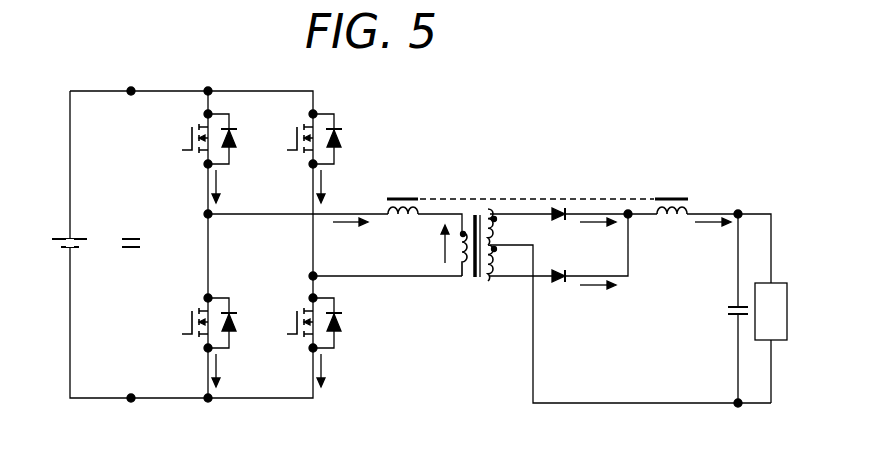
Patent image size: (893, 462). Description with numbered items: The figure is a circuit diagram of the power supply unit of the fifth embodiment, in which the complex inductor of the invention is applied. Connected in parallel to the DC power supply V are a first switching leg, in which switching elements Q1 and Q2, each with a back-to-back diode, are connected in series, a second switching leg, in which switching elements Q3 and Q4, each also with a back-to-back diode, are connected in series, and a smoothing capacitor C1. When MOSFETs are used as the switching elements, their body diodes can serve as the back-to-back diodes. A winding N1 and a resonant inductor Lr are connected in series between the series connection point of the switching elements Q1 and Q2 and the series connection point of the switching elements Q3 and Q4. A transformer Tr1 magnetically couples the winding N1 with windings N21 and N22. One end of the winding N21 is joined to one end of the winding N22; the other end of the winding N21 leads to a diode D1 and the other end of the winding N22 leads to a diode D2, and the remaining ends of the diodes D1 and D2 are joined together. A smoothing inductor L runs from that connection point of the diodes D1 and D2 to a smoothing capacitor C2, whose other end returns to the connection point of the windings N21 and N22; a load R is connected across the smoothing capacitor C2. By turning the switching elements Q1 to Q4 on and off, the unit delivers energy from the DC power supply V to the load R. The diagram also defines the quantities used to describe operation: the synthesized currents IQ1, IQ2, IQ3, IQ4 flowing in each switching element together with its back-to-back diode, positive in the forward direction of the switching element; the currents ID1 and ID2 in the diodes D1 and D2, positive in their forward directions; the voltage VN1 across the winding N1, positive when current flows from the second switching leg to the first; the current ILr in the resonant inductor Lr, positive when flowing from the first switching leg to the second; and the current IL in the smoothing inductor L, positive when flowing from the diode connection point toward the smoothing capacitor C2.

The DC power supply V is at (61, 244).
The smoothing capacitor C1 is at (144, 244).
The switching element Q1 is at (197, 139).
The switching element Q2 is at (197, 323).
The switching element Q3 is at (302, 139).
The switching element Q4 is at (302, 323).
The synthesized current IQ1 is at (231, 186).
The synthesized current IQ2 is at (231, 370).
The synthesized current IQ3 is at (336, 186).
The synthesized current IQ4 is at (336, 370).
The current in the resonant inductor ILr is at (350, 232).
The resonant inductor Lr is at (385, 197).
The transformer Tr1 is at (474, 214).
The winding N1 is at (467, 278).
The voltage across the winding VN1 is at (427, 244).
The winding N21 is at (490, 209).
The winding N22 is at (487, 279).
The diode D1 is at (559, 227).
The diode D2 is at (559, 288).
The current flowing in the diode ID1 is at (598, 232).
The current flowing in the diode ID2 is at (598, 294).
The smoothing inductor L is at (671, 219).
The current in the smoothing inductor IL is at (713, 232).
The smoothing capacitor C2 is at (725, 308).
The load R is at (779, 311).